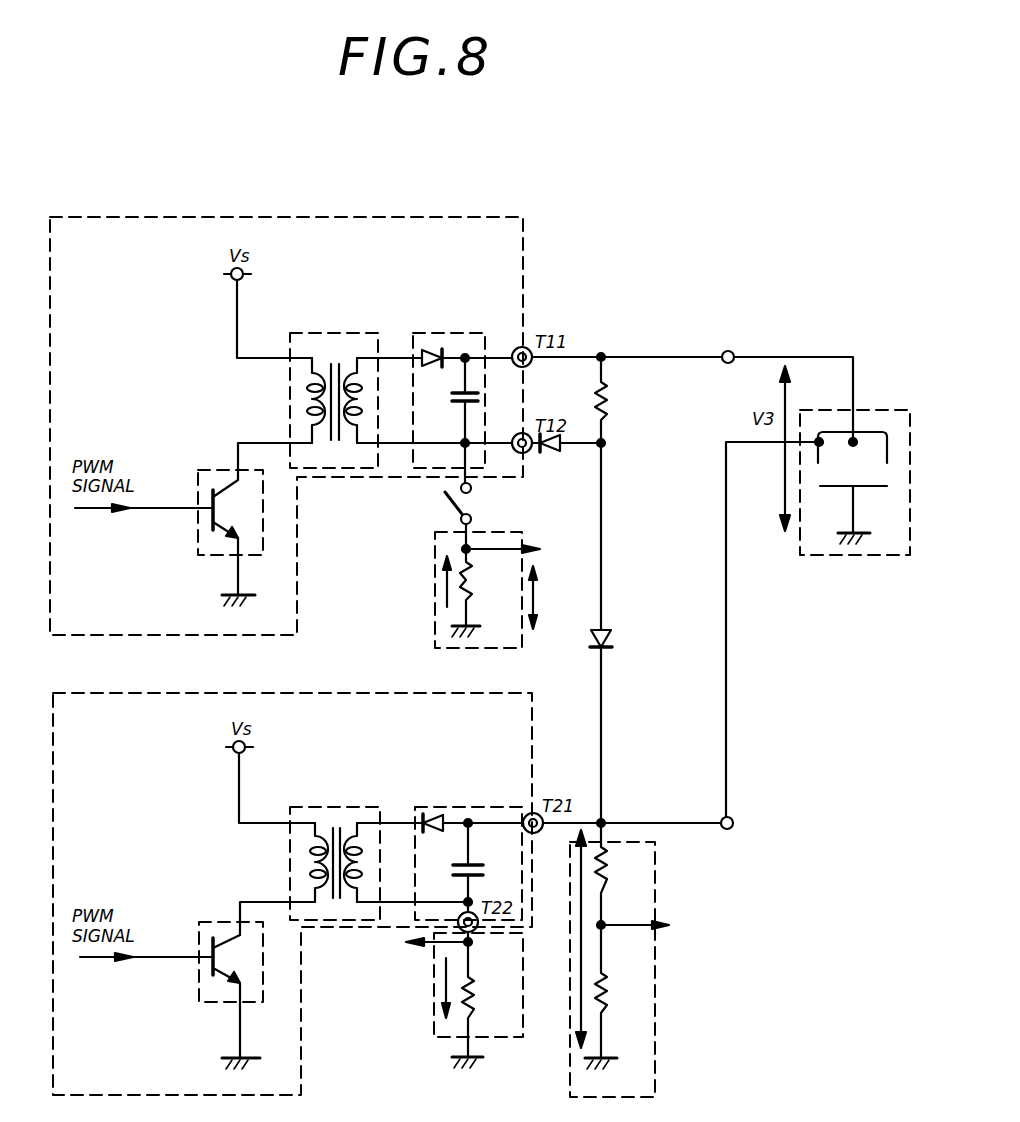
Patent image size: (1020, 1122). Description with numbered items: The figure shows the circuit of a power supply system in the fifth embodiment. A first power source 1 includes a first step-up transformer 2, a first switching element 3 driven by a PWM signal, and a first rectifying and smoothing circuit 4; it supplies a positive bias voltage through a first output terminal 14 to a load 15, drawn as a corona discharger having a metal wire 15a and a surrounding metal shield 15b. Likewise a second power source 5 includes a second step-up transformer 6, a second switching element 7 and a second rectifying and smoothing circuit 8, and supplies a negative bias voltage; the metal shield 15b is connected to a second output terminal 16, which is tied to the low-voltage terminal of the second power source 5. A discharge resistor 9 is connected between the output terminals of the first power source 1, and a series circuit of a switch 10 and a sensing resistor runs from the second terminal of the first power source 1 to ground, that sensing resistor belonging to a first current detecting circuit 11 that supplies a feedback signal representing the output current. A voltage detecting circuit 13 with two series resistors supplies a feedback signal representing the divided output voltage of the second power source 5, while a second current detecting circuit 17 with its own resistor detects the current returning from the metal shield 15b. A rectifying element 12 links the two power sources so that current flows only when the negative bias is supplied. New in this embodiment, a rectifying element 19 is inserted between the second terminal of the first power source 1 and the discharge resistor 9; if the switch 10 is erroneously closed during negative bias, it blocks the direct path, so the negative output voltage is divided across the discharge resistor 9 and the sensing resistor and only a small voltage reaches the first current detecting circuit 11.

The first power source 1 is at (262, 216).
The first step-up transformer 2 is at (327, 331).
The first switching element 3 is at (222, 469).
The first rectifying and smoothing circuit 4 is at (445, 331).
The second power source 5 is at (255, 693).
The second step-up transformer 6 is at (316, 805).
The second switching element 7 is at (222, 920).
The second rectifying and smoothing circuit 8 is at (446, 805).
The discharge resistor 9 is at (605, 425).
The switch 10 is at (444, 498).
The first current detecting circuit 11 is at (522, 602).
The rectifying element 12 is at (613, 642).
The voltage detecting circuit 13 is at (657, 1048).
The first output terminal 14 is at (728, 350).
The load 15 is at (861, 459).
The metal wire 15a is at (858, 438).
The metal shield 15b is at (893, 455).
The second output terminal 16 is at (734, 822).
The second current detecting circuit 17 is at (430, 1018).
The rectifying element 19 is at (549, 455).